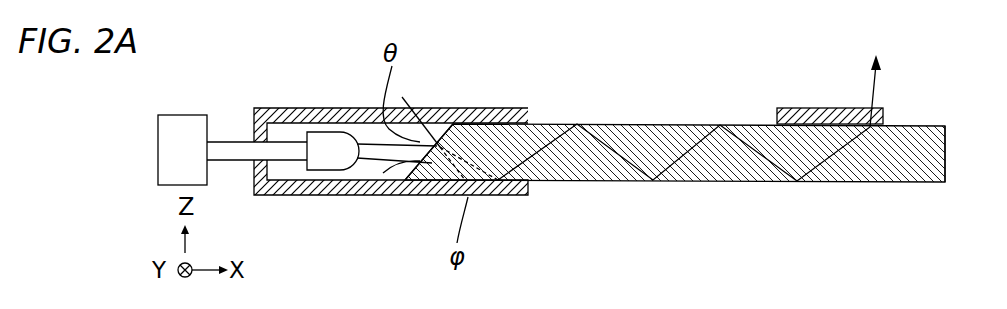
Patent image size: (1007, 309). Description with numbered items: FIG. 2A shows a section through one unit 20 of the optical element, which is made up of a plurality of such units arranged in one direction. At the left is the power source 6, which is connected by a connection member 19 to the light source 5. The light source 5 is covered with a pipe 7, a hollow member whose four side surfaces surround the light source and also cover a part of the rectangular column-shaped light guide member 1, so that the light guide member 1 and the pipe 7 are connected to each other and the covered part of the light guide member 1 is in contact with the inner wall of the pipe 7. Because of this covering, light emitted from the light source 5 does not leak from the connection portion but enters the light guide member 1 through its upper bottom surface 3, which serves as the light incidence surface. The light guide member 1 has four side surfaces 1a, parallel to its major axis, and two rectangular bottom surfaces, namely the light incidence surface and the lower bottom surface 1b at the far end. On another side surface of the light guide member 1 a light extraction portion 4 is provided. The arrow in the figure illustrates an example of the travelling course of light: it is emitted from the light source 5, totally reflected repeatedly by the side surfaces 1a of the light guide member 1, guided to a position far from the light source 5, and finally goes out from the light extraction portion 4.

The light guide member 1 is at (692, 182).
The side surfaces 1a is at (907, 167).
The lower bottom surface 1b is at (947, 163).
The upper bottom surface 3 is at (383, 196).
The light extraction portion 4 is at (805, 108).
The light source 5 is at (325, 145).
The power source 6 is at (178, 147).
The pipe 7 is at (461, 108).
The connection member 19 is at (218, 145).
The unit 20 is at (828, 272).